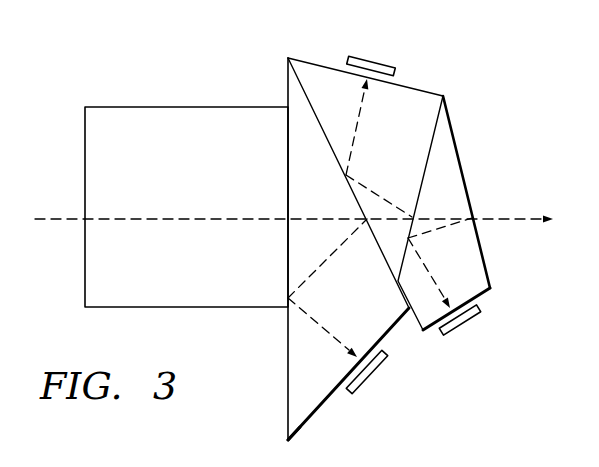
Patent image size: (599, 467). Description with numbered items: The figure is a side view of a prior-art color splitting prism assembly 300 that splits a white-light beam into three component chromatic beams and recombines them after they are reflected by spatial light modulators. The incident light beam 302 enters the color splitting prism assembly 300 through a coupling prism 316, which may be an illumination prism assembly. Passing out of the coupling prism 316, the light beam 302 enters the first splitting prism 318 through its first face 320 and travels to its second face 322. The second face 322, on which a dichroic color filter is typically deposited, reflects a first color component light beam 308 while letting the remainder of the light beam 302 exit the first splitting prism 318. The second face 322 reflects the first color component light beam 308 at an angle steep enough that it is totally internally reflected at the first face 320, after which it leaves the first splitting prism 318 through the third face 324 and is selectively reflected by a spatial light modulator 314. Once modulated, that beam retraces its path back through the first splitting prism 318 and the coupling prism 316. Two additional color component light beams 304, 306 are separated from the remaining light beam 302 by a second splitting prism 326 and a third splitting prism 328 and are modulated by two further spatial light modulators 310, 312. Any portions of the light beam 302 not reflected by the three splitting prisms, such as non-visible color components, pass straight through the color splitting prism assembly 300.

The color splitting prism assembly 300 is at (503, 81).
The light beam 302 is at (55, 220).
The second color component light beam 304 is at (357, 127).
The third color component light beam 306 is at (430, 272).
The first color component light beam 308 is at (322, 328).
The spatial light modulator 310 is at (375, 57).
The spatial light modulator 312 is at (463, 327).
The spatial light modulator 314 is at (364, 388).
The coupling prism 316 is at (168, 176).
The first splitting prism 318 is at (288, 385).
The first face 320 is at (288, 355).
The second face 322 is at (407, 298).
The third face 324 is at (300, 409).
The second splitting prism 326 is at (418, 98).
The third splitting prism 328 is at (453, 172).